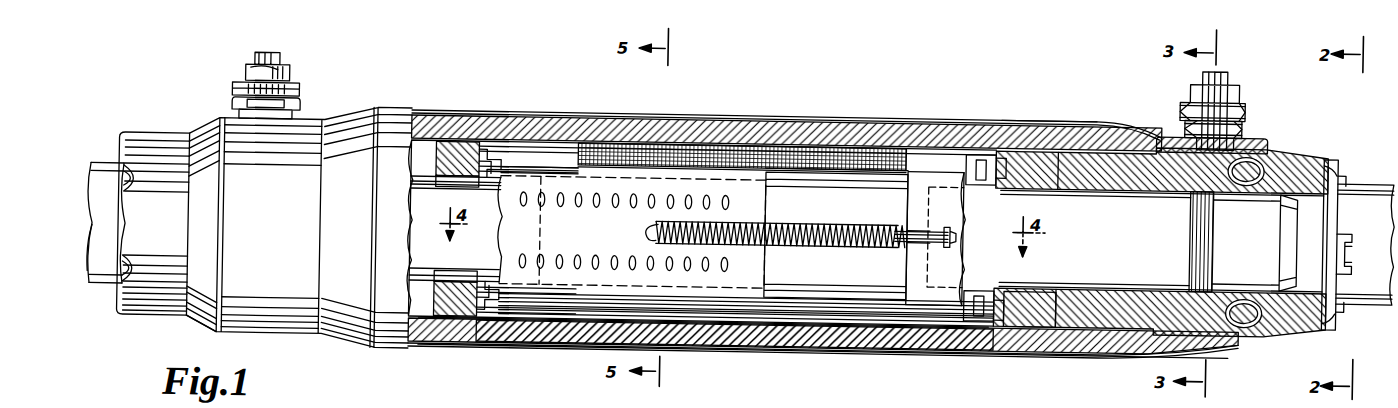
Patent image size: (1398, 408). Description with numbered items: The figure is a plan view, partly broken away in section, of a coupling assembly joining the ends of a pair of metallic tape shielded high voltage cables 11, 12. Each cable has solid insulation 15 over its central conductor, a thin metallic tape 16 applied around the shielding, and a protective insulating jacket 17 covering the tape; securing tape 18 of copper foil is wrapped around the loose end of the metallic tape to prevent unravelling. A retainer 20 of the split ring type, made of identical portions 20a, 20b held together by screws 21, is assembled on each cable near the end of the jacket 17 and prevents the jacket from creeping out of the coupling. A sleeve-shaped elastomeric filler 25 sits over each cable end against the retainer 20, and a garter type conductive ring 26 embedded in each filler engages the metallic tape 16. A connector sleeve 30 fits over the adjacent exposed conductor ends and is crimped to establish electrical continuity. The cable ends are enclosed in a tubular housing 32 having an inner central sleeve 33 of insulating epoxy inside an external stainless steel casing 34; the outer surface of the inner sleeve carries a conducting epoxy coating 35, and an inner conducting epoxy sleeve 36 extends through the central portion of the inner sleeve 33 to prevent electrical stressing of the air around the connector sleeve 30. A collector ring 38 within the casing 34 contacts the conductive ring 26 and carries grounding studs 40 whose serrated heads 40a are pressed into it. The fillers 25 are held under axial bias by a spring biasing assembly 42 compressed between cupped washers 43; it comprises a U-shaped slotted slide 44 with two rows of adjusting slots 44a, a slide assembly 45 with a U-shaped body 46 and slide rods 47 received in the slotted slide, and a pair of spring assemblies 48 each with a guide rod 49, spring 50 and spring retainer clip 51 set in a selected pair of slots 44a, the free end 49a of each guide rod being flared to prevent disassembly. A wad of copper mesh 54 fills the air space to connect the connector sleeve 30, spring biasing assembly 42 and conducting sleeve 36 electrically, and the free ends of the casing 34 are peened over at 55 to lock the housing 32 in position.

The high voltage cable 11 is at (110, 158).
The high voltage cable 12 is at (1372, 168).
The insulation 15 is at (492, 300).
The metallic tape 16 is at (1212, 224).
The protective insulating jacket 17 is at (102, 290).
The securing tape 18 is at (1200, 202).
The retainer 20 is at (1312, 205).
The retainer portion 20a is at (1340, 166).
The retainer portion 20b is at (1340, 298).
The screws 21 is at (1352, 228).
The elastomeric filler 25 is at (442, 304).
The conductive ring 26 is at (1244, 314).
The connector sleeve 30 is at (745, 292).
The housing 32 is at (672, 110).
The inner central sleeve 33 is at (840, 328).
The casing 34 is at (1042, 110).
The conducting epoxy coating 35 is at (918, 344).
The inner epoxy sleeve 36 is at (790, 300).
The collector ring 38 is at (1166, 124).
The grounding stud 40 is at (262, 55).
The stud head 40a is at (1243, 108).
The spring biasing assembly 42 is at (598, 318).
The cupped washers 43 is at (472, 141).
The slotted slide 44 is at (556, 174).
The adjusting slots 44a is at (578, 252).
The slide assembly 45 is at (914, 163).
The body 46 is at (950, 145).
The slide rods 47 is at (810, 166).
The spring assembly 48 is at (782, 220).
The guide rod 49 is at (906, 226).
The free end of guide rod 49a is at (952, 227).
The spring 50 is at (856, 220).
The spring retainer clip 51 is at (648, 224).
The copper mesh 54 is at (745, 140).
The peened-over casing end 55 is at (128, 273).